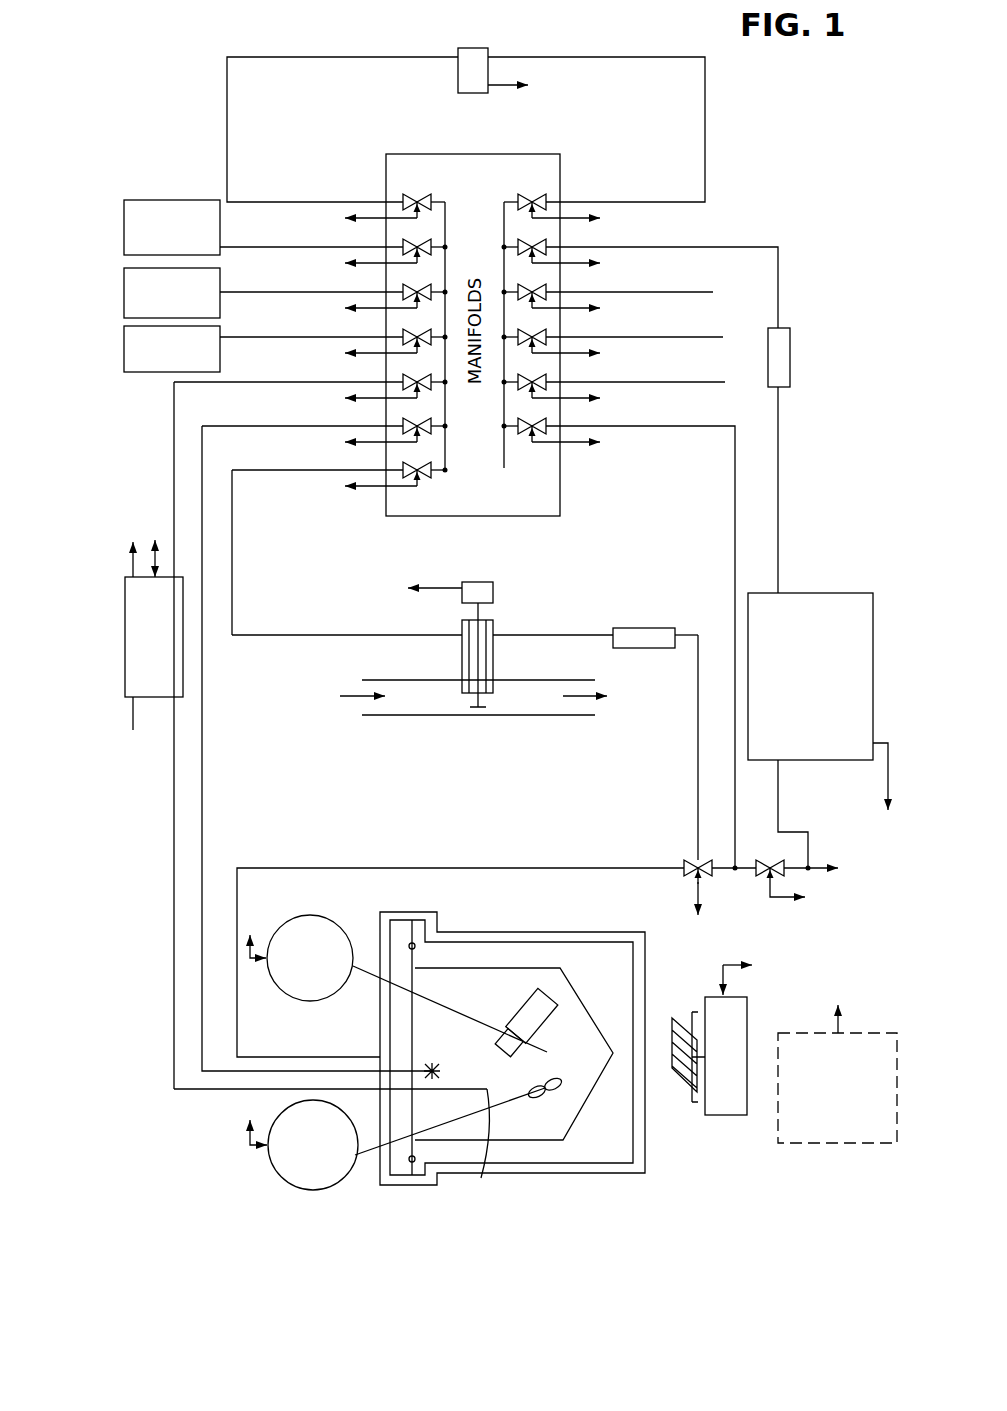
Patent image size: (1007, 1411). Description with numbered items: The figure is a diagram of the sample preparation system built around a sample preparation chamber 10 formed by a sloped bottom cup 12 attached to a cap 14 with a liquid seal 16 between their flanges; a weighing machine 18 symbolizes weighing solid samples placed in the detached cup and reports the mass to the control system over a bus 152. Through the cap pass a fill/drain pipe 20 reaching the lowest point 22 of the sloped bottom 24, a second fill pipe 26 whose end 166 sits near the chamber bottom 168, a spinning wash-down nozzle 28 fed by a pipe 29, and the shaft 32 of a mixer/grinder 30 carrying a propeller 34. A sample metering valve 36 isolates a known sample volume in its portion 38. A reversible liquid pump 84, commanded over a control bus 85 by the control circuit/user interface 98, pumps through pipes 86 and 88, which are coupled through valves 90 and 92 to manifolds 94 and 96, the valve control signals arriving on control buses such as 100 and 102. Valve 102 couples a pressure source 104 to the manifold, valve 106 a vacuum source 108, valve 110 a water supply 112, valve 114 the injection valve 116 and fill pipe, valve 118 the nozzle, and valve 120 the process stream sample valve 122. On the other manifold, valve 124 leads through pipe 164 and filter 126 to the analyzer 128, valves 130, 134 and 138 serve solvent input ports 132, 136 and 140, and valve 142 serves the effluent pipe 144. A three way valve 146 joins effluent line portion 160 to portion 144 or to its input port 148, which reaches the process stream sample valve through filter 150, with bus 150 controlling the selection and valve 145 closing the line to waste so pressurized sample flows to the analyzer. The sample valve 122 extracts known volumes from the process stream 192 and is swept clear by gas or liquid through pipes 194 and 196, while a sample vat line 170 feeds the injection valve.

The sample preparation chamber 10 is at (373, 934).
The sloped bottom cup 12 is at (547, 968).
The cap 14 is at (380, 914).
The liquid seal 16 is at (418, 920).
The weighing machine 18 is at (747, 1015).
The fill/drain pipe 20 is at (578, 1053).
The lowest point 22 is at (616, 1050).
The sloped bottom 24 is at (584, 1010).
The second fill pipe 26 is at (444, 1089).
The nozzle 28 is at (438, 1068).
The pipe 29 is at (202, 874).
The stirring/grinding mechanism 30 is at (271, 1133).
The shaft 32 is at (504, 1102).
The propeller 34 is at (550, 1095).
The sample metering valve 36 is at (277, 927).
The portion of the sample metering valve 38 is at (502, 1012).
The liquid pump 84 is at (461, 90).
The control bus 85 is at (522, 88).
The pipe 86 is at (322, 57).
The pipe 88 is at (594, 57).
The valve 90 is at (410, 198).
The valve 92 is at (534, 197).
The manifold 94 is at (445, 207).
The manifold 96 is at (504, 230).
The control circuit/user interface 98 is at (836, 1143).
The control bus 100 is at (362, 228).
The valve 102 is at (418, 240).
The pressure source 104 is at (220, 222).
The valve 106 is at (418, 285).
The vacuum source 108 is at (220, 270).
The valve 110 is at (418, 330).
The water supply 112 is at (220, 318).
The valve 114 is at (418, 375).
The injection valve 116 is at (125, 577).
The valve 118 is at (418, 419).
The valve 120 is at (418, 463).
The process stream sample valve 122 is at (462, 622).
The valve 124 is at (510, 244).
The filter 126 is at (790, 353).
The analyzer 128 is at (858, 593).
The valve 130 is at (510, 289).
The input port 132 is at (713, 292).
The valve 134 is at (510, 334).
The input port 136 is at (717, 337).
The valve 138 is at (510, 379).
The input port 140 is at (718, 381).
The valve 142 is at (510, 423).
The effluent pipe 144 is at (744, 876).
The valve 145 is at (773, 860).
The three way valve 146 is at (691, 860).
The input port 148 is at (698, 791).
The filter 150 is at (676, 628).
The bus 152 is at (723, 972).
The portion of the effluent line 160 is at (578, 868).
The pipe 164 is at (755, 247).
The end of the fill pipe 166 is at (481, 1178).
The bottom of the sample preparation chamber 168 is at (172, 464).
The sample vat line 170 is at (140, 718).
The process stream 192 is at (516, 688).
The pipe 194 is at (390, 636).
The pipe 196 is at (570, 636).